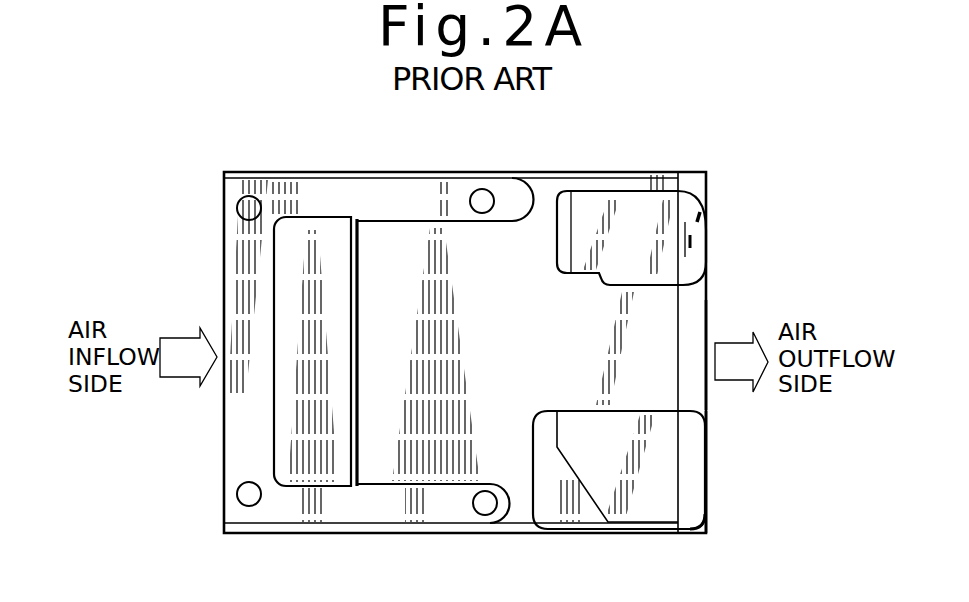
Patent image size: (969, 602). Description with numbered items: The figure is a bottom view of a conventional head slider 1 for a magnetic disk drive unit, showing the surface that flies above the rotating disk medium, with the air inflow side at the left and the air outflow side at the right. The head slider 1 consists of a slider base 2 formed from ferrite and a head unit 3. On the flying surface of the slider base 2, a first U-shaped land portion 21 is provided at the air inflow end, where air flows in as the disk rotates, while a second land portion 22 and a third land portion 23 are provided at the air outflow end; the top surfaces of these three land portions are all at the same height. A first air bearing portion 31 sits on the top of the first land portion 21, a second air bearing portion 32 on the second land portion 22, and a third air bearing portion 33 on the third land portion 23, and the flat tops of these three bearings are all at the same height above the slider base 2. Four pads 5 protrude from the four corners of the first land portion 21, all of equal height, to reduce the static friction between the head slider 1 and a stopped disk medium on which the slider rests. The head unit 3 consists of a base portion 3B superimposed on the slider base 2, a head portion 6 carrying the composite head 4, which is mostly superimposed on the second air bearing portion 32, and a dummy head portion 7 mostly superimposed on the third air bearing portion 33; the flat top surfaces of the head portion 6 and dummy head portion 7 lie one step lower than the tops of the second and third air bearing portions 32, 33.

The head slider 1 is at (213, 287).
The slider base 2 is at (565, 172).
The head unit 3 is at (698, 173).
The base portion 3B is at (705, 395).
The head 4 is at (701, 215).
The pads 5 is at (250, 196).
The head portion 6 is at (700, 255).
The dummy head portion 7 is at (697, 478).
The first U-shaped land portion 21 is at (359, 290).
The second land portion 22 is at (557, 238).
The third land portion 23 is at (546, 435).
The first air bearing portion 31 is at (340, 358).
The second air bearing portion 32 is at (614, 258).
The third air bearing portion 33 is at (620, 425).